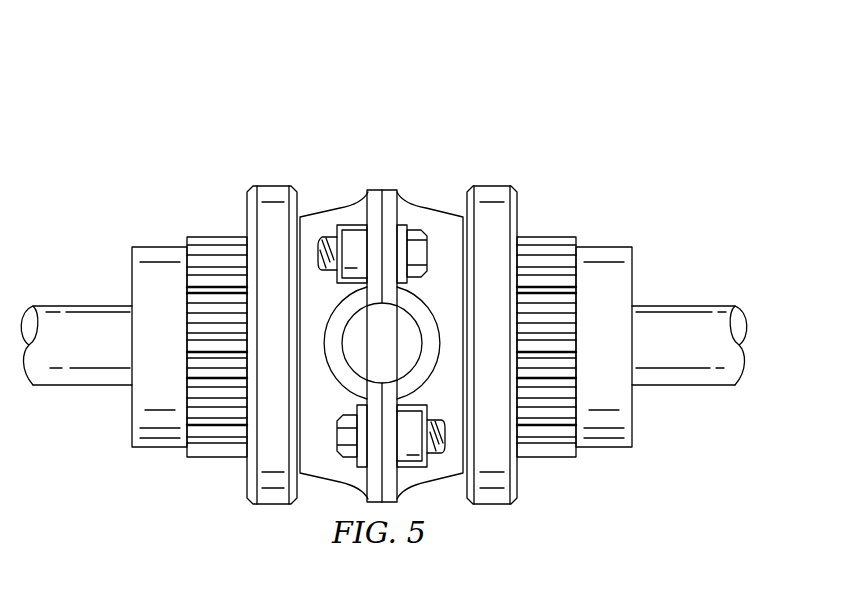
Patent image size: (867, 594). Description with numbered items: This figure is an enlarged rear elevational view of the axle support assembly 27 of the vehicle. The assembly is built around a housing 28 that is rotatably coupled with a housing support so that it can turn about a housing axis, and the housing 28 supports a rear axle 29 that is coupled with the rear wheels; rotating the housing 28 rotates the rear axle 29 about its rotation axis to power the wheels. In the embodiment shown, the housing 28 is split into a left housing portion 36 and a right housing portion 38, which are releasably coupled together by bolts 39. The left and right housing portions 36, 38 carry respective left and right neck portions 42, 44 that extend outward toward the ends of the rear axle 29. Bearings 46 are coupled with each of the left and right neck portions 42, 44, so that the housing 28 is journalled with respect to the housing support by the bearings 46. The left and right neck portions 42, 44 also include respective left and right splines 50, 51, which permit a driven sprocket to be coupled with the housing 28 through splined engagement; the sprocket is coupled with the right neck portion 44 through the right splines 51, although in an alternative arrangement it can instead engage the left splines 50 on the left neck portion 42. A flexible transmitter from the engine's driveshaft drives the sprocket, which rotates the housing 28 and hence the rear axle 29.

The axle support assembly 27 is at (205, 133).
The housing 28 is at (383, 178).
The rear axle 29 is at (80, 305).
The left housing portion 36 is at (326, 197).
The right housing portion 38 is at (438, 199).
The bolts 39 is at (427, 255).
The left neck portion 42 is at (157, 242).
The right neck portion 44 is at (607, 244).
The bearings 46 is at (272, 186).
The left splines 50 is at (213, 457).
The right splines 51 is at (548, 457).